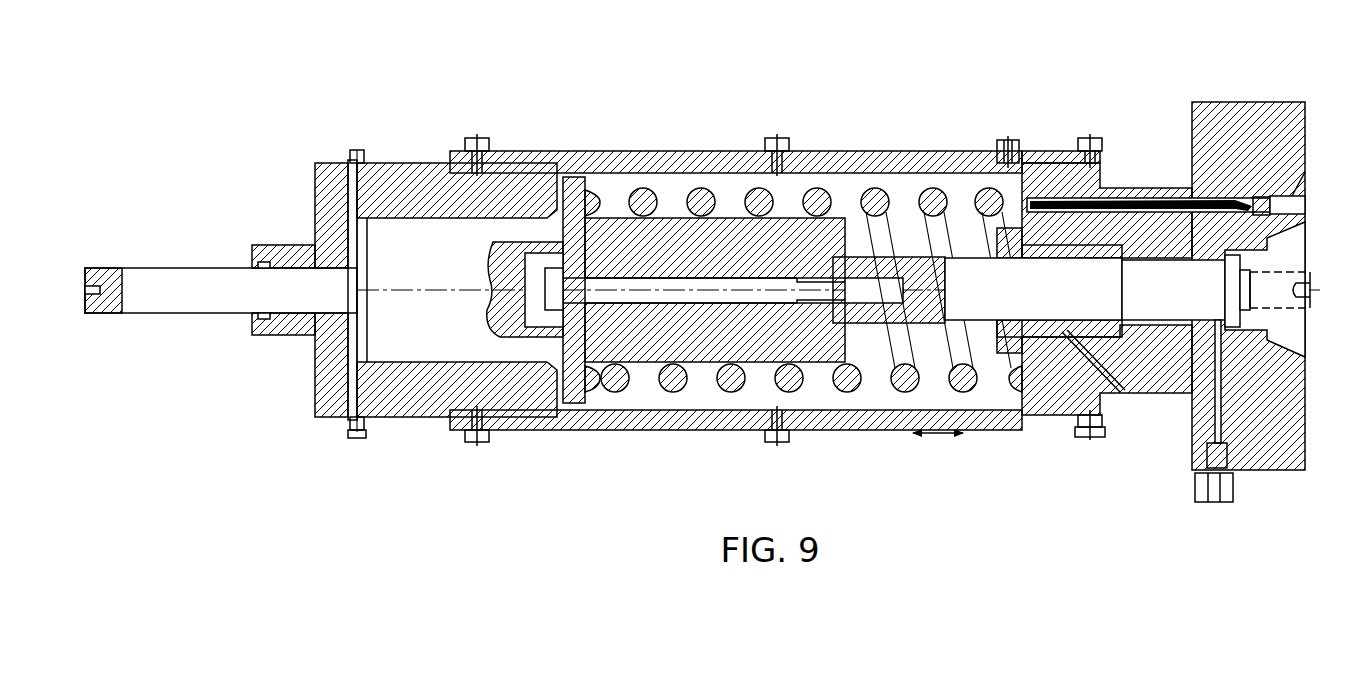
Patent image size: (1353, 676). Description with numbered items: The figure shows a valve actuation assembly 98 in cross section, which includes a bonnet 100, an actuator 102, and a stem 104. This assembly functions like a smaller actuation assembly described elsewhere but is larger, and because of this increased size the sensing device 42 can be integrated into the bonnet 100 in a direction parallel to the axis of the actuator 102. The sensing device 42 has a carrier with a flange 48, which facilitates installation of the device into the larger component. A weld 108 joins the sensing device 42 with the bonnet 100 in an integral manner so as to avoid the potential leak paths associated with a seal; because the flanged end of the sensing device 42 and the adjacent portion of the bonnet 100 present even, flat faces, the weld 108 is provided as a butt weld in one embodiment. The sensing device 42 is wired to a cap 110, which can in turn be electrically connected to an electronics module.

The valve actuation assembly 98 is at (275, 90).
The bonnet 100 is at (1240, 102).
The actuator 102 is at (674, 206).
The stem 104 is at (1087, 300).
The cap 110 is at (1012, 208).
The sensing device 42 is at (1250, 200).
The flange 48 is at (1305, 178).
The weld 108 is at (1308, 190).